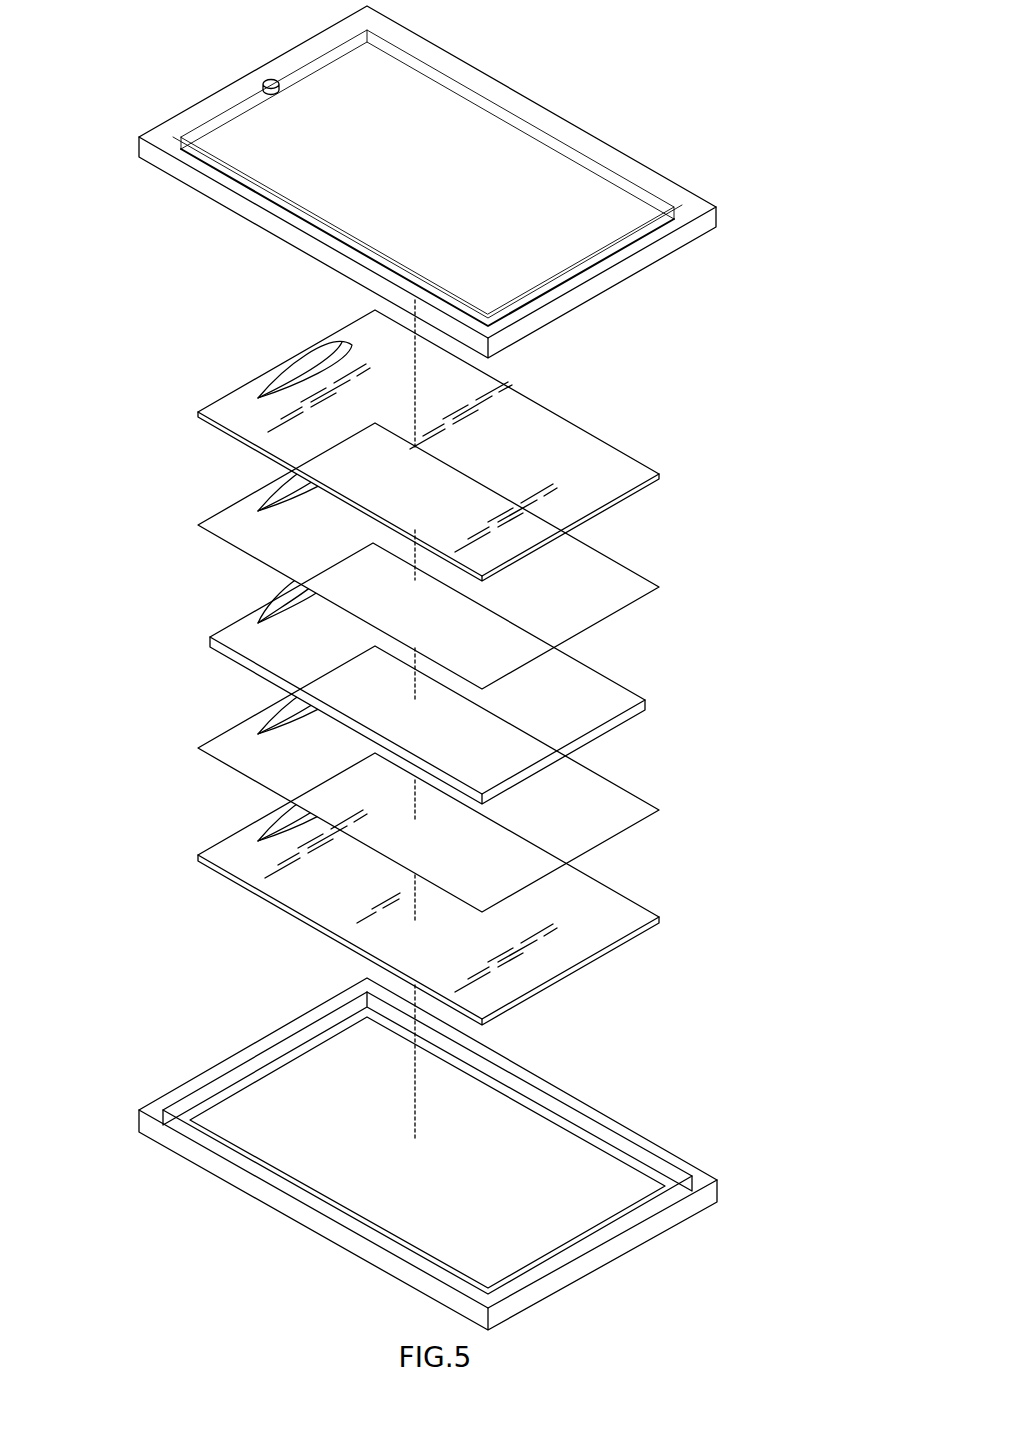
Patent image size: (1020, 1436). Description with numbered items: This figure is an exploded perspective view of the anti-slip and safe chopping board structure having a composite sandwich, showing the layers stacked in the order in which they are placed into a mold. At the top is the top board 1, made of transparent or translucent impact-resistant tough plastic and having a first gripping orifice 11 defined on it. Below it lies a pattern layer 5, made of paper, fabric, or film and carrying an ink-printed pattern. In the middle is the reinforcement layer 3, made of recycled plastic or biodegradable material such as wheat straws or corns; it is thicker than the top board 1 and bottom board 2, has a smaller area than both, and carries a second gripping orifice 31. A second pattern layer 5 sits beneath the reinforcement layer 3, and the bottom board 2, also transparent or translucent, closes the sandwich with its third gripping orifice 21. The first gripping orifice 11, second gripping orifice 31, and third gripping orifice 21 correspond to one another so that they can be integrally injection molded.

The top board 1 is at (592, 458).
The first gripping orifice 11 is at (295, 377).
The bottom board 2 is at (620, 918).
The third gripping orifice 21 is at (297, 818).
The reinforcement layer 3 is at (608, 688).
The second gripping orifice 31 is at (290, 607).
The pattern layer 5 is at (517, 105).